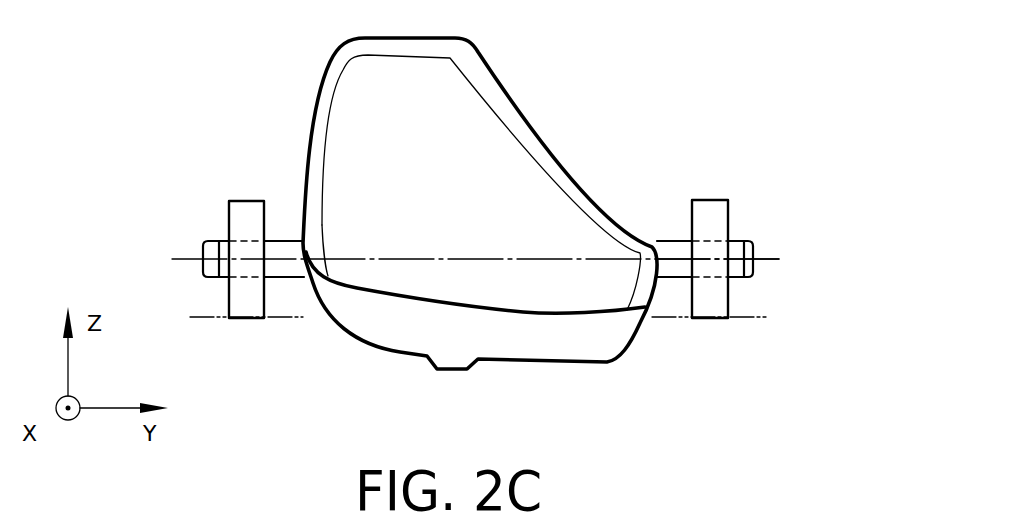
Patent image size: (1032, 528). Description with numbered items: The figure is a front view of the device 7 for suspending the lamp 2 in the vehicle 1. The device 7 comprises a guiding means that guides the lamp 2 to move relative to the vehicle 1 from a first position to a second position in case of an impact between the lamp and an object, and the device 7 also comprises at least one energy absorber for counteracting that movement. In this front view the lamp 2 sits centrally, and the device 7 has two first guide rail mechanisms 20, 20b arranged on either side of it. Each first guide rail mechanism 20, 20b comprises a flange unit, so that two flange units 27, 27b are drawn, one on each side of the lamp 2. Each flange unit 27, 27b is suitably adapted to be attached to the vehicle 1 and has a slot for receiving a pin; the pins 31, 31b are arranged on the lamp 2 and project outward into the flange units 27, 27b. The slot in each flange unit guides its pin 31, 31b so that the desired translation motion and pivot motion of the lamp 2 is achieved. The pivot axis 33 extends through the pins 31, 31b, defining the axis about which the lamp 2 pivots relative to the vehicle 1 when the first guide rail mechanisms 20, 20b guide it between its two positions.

The device 7 is at (665, 98).
The lamp 2 is at (432, 160).
The first guide rail mechanism 20 is at (148, 233).
The first guide rail mechanism 20b is at (833, 232).
The flange unit 27 is at (245, 201).
The flange unit 27b is at (712, 200).
The pin 31 is at (219, 240).
The pin 31b is at (738, 240).
The pivot axis 33 is at (771, 259).
The vehicle 1 is at (752, 318).